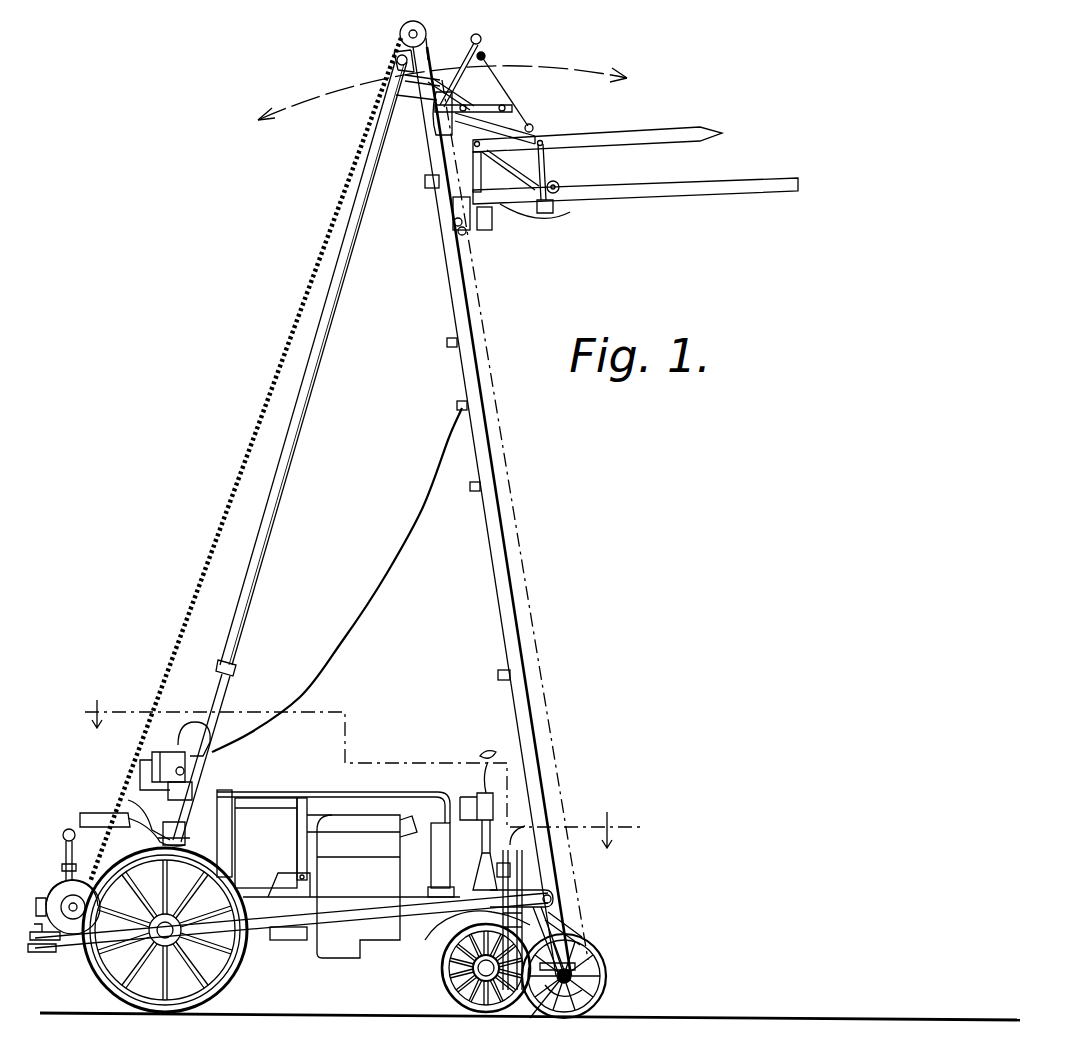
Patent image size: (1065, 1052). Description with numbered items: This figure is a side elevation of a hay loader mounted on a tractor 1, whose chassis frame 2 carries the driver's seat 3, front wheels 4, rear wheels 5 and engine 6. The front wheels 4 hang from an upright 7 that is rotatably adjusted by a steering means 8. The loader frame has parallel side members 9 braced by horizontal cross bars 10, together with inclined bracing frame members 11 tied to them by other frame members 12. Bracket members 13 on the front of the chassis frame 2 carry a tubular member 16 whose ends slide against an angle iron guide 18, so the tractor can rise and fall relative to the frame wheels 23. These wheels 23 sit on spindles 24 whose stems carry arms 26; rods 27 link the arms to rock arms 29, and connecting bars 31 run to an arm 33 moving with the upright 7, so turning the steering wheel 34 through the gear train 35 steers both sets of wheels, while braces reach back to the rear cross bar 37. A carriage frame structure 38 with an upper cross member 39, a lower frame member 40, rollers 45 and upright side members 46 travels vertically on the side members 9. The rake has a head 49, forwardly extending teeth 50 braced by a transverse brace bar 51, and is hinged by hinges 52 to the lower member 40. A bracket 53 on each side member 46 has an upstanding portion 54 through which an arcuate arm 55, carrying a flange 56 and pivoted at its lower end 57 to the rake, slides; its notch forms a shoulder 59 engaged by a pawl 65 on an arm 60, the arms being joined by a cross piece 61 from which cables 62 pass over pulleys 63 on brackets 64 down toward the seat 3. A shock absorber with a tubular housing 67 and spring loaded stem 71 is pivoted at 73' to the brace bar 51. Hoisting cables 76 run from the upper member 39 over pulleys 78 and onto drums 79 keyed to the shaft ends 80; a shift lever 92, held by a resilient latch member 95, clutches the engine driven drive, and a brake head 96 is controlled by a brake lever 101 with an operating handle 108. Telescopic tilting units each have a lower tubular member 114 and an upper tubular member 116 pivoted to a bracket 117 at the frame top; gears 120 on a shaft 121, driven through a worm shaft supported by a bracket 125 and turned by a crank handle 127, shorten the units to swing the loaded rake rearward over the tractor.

The tractor 1 is at (333, 903).
The chassis frame 2 is at (462, 915).
The driver's seat 3 is at (97, 712).
The front wheels 4 is at (440, 988).
The rear wheels 5 is at (220, 982).
The tractor engine 6 is at (385, 868).
The upright 7 is at (460, 928).
The steering adjusting means 8 is at (492, 766).
The side members 9 is at (604, 993).
The cross bars 10 is at (464, 196).
The bracing frame members 11 is at (522, 714).
The frame members 12 is at (502, 672).
The bracket members 13 is at (556, 884).
The tubular member 16 is at (572, 895).
The angle iron guide 18 is at (545, 828).
The wheels 23 is at (592, 968).
The spindles 24 is at (584, 986).
The arms 26 is at (545, 1014).
The rods 27 is at (582, 928).
The rock arms 29 is at (565, 908).
The connecting bars 31 is at (540, 862).
The arm 33 is at (505, 863).
The steering wheel 34 is at (148, 798).
The gear train 35 is at (462, 797).
The rear cross bar 37 is at (38, 950).
The frame structure 38 is at (462, 162).
The upper cross member 39 is at (445, 95).
The lower frame member 40 is at (460, 232).
The rollers 45 is at (455, 210).
The upright side members 46 is at (483, 208).
The head 49 is at (497, 230).
The teeth 50 is at (684, 192).
The transverse brace bar 51 is at (567, 212).
The hinges 52 is at (482, 232).
The bracket 53 is at (425, 181).
The upstanding portion 54 is at (472, 72).
The arcuate arm 55 is at (400, 98).
The flange 56 is at (405, 80).
The pivotal connection 57 is at (525, 212).
The shoulder 59 is at (500, 82).
The arm 60 is at (470, 100).
The cross piece 61 is at (535, 126).
The cables 62 is at (496, 62).
The pulleys 63 is at (488, 52).
The brackets 64 is at (479, 36).
The pawl 65 is at (580, 78).
The tubular housing 67 is at (545, 138).
The stem 71 is at (558, 182).
The pivotal connection 73' is at (583, 190).
The cables 76 is at (290, 340).
The pulleys 78 is at (427, 30).
The drums 79 is at (62, 892).
The shaft ends 80 is at (72, 918).
The shift lever 92 is at (65, 836).
The resilient latch member 95 is at (63, 866).
The brake head 96 is at (80, 882).
The brake lever 101 is at (186, 836).
The operating handle 108 is at (215, 808).
The lower tubular member 114 is at (238, 668).
The tubular member 116 is at (304, 440).
The bracket 117 is at (396, 58).
The gears 120 is at (186, 770).
The shaft 121 is at (194, 784).
The bracket 125 is at (190, 740).
The crank handle 127 is at (152, 762).